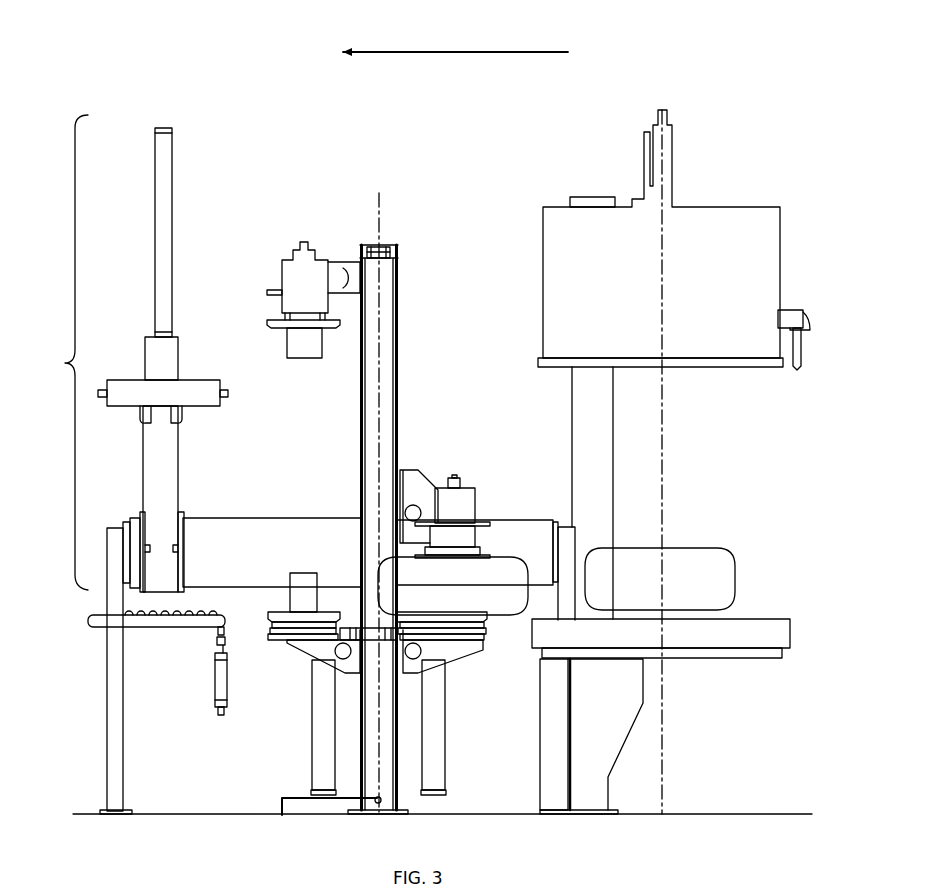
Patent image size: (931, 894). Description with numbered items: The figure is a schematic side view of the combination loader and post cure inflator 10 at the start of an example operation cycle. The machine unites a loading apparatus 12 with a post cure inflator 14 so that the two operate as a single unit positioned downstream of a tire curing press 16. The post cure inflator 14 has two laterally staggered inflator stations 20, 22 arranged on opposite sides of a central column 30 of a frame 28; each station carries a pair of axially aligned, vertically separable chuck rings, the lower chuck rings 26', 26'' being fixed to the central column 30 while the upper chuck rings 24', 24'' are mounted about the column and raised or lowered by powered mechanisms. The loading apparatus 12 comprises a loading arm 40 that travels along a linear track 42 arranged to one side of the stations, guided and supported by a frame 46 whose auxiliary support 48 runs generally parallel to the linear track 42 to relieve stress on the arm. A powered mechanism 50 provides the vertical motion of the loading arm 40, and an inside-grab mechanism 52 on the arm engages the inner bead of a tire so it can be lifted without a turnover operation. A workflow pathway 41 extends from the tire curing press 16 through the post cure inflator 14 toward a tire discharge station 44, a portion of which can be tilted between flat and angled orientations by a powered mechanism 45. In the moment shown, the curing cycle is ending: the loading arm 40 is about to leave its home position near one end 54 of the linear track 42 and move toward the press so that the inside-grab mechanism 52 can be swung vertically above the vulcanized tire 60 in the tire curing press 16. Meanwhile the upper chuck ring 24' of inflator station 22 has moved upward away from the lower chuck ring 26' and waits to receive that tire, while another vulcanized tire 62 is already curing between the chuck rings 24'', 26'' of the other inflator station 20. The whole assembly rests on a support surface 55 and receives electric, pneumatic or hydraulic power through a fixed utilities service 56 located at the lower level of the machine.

The combination loader and post cure inflator 10 is at (403, 150).
The loading apparatus 12 is at (213, 175).
The post cure inflator 14 is at (422, 270).
The tire curing press 16 is at (738, 183).
The inflator station 20 is at (462, 455).
The inflator station 22 is at (287, 443).
The upper chuck ring 24' is at (294, 300).
The upper chuck ring 24'' is at (465, 505).
The lower chuck ring 26' is at (332, 684).
The lower chuck ring 26'' is at (443, 703).
The frame 28 is at (383, 250).
The central column 30 is at (396, 334).
The loading arm 40 is at (60, 352).
The workflow pathway 41 is at (464, 52).
The linear track 42 is at (268, 535).
The tire discharge station 44 is at (92, 628).
The powered mechanism 45 is at (217, 684).
The frame 46 is at (107, 735).
The auxiliary support 48 is at (253, 590).
The powered mechanism 50 is at (172, 218).
The inside-grab mechanism 52 is at (202, 385).
The end of the linear track 54 is at (110, 515).
The support surface 55 is at (707, 812).
The utilities service 56 is at (282, 805).
The vulcanized tire 60 is at (735, 575).
The vulcanized tire 62 is at (505, 565).